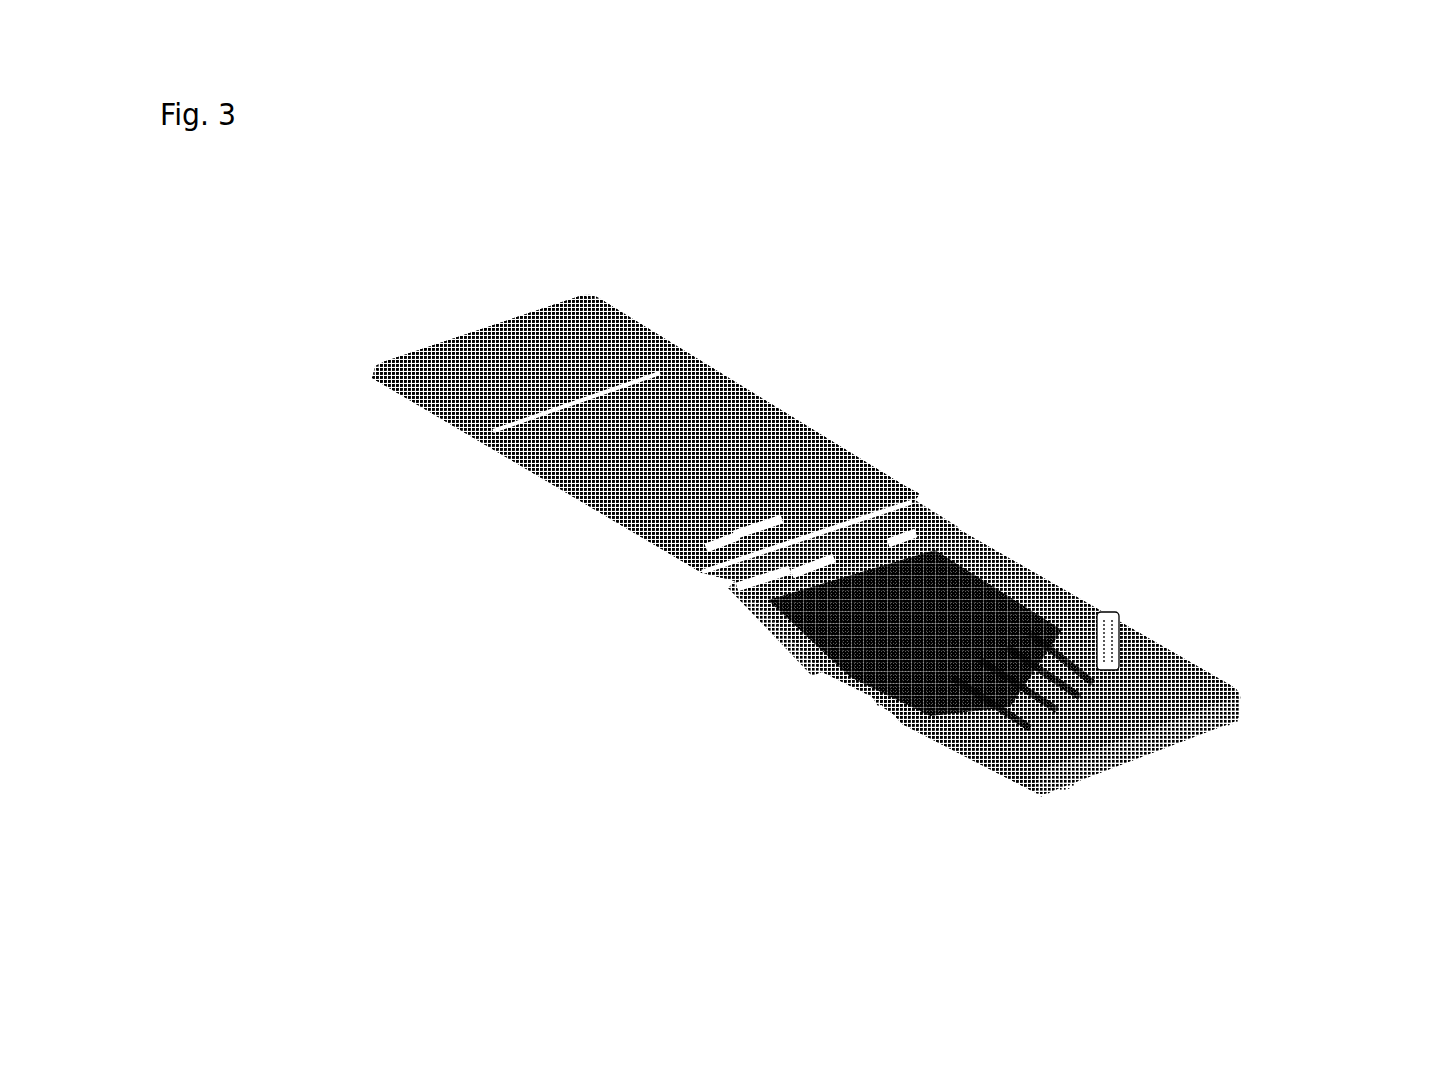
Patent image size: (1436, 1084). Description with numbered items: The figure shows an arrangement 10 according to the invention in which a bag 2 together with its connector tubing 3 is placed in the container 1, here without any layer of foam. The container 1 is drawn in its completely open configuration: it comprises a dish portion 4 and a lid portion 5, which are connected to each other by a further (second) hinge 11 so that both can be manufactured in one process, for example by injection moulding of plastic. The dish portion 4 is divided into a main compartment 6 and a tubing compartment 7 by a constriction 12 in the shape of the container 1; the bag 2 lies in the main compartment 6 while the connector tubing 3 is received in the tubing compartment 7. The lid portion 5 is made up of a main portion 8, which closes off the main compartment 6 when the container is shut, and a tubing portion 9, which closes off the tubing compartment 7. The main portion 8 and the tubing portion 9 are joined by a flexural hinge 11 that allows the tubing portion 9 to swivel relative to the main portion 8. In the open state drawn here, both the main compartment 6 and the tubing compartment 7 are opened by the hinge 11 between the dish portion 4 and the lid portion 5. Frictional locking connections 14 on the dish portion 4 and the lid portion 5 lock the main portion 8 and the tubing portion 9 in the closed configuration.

The container 1 is at (1009, 272).
The arrangement 10 is at (1289, 277).
The lid portion 5 is at (824, 322).
The tubing portion 9 is at (622, 343).
The main portion 8 is at (785, 447).
The dish portion 4 is at (727, 678).
The hinge 11 is at (945, 486).
The bag 2 is at (950, 590).
The connector tubing 3 is at (1109, 691).
The main compartment 6 is at (825, 675).
The constriction 12 is at (877, 740).
The tubing compartment 7 is at (950, 760).
The frictional locking connections 14 is at (1130, 610).